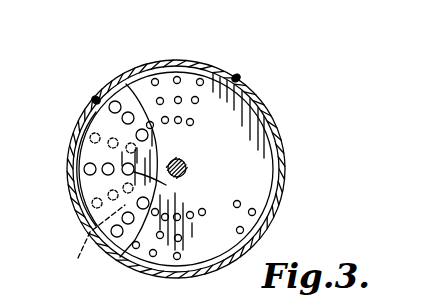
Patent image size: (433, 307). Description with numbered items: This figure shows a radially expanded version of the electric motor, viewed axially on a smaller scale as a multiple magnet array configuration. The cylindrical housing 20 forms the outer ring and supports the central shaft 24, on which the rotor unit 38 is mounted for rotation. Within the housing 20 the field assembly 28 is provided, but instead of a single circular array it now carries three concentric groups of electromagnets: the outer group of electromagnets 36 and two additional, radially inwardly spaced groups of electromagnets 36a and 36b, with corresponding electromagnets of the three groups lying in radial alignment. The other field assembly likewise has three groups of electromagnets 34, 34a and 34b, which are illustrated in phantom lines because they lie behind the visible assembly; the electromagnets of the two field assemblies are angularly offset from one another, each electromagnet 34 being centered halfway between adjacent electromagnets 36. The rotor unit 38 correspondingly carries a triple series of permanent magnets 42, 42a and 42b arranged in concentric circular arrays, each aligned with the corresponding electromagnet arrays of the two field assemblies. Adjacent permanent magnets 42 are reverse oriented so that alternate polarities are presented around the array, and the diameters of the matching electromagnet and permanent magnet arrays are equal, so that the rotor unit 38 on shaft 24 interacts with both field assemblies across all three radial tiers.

The cylindrical housing 20 is at (284, 137).
The shaft 24 is at (187, 167).
The field assembly 28 is at (95, 99).
The electromagnets 34 is at (78, 110).
The electromagnets 34a is at (74, 156).
The electromagnets 34b is at (93, 243).
The electromagnets 36 is at (84, 172).
The electromagnets 36a is at (89, 196).
The electromagnets 36b is at (169, 188).
The rotor unit 38 is at (238, 77).
The permanent magnet components 42 is at (199, 79).
The permanent magnets 42a is at (180, 104).
The permanent magnets 42b is at (166, 124).